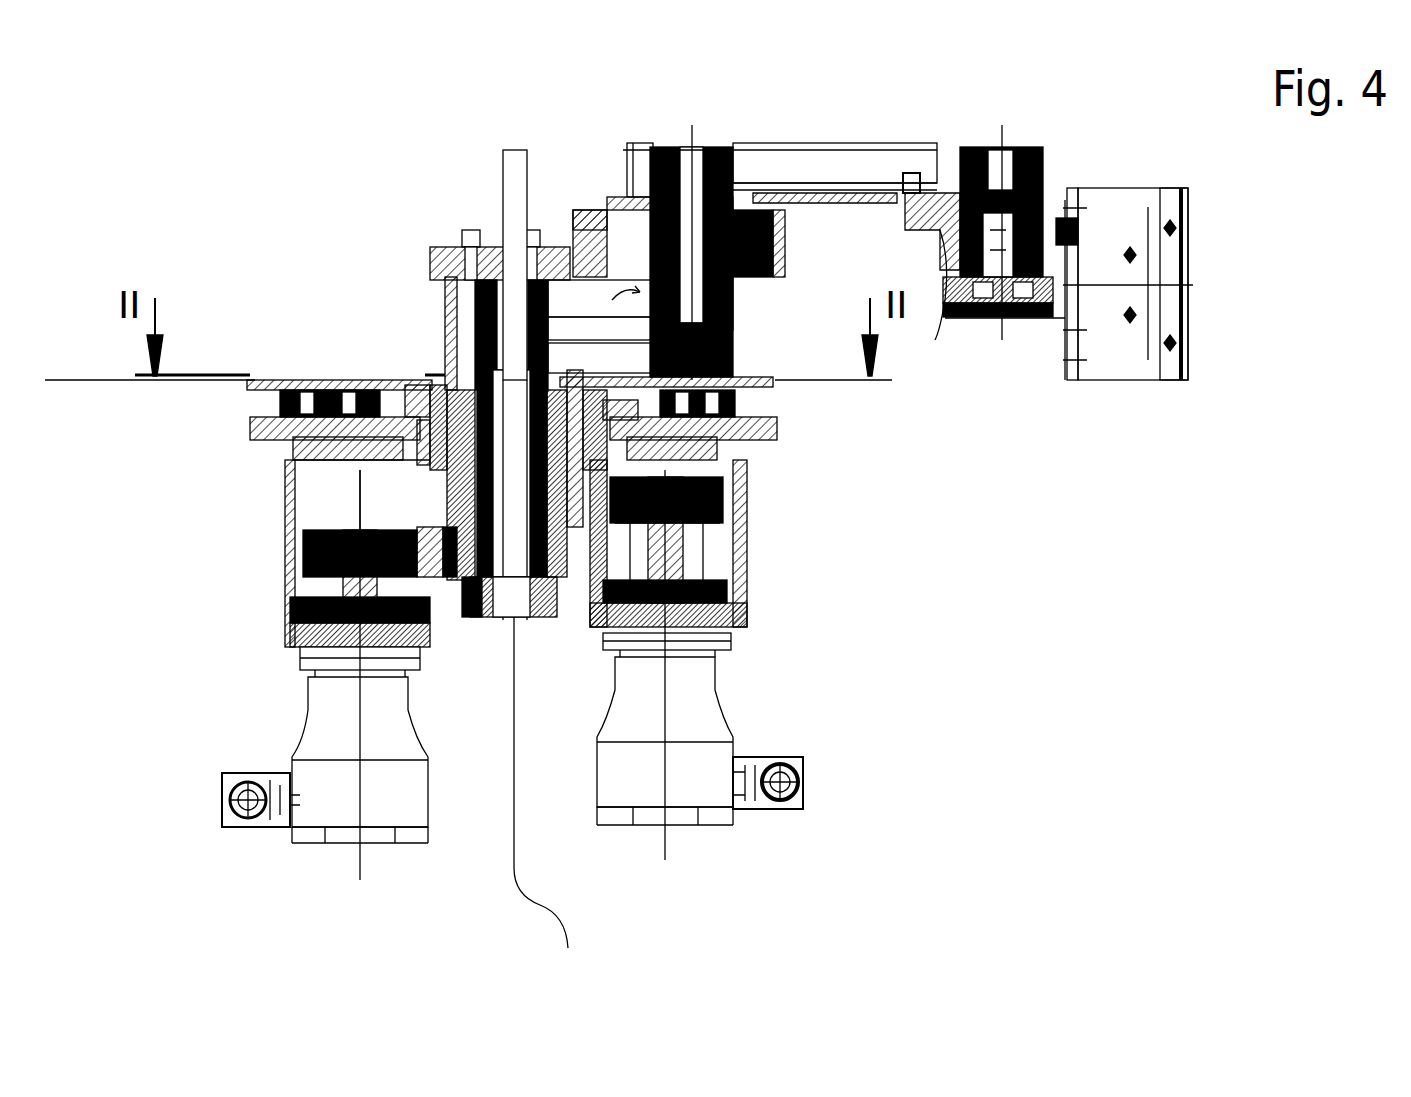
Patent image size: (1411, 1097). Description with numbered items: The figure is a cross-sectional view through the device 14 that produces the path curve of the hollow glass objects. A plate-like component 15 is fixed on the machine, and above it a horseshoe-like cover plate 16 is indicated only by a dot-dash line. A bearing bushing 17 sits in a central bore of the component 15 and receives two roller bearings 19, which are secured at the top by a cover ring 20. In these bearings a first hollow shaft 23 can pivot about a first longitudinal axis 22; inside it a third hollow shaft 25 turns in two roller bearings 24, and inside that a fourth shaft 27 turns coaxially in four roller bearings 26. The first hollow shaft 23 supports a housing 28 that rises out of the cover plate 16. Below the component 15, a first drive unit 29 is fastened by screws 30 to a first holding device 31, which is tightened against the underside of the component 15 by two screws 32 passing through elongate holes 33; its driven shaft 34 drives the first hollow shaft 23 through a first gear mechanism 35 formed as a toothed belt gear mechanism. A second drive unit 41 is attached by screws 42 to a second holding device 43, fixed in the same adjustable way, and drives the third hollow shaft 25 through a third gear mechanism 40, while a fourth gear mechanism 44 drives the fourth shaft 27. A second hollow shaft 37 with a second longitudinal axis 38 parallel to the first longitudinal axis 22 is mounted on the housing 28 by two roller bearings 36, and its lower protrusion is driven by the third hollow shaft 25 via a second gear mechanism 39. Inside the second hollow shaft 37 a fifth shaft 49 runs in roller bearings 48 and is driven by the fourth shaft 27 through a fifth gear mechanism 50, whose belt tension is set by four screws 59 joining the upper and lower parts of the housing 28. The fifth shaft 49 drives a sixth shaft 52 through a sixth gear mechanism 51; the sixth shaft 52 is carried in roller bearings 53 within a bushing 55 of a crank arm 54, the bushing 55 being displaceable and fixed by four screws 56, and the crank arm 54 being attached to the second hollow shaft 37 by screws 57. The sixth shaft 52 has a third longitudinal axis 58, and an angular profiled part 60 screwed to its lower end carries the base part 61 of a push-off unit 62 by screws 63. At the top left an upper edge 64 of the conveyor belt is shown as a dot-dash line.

The device 14 is at (983, 587).
The plate-like component 15 is at (250, 432).
The cover plate 16 is at (250, 385).
The bearing bushing 17 is at (735, 468).
The roller bearings 19 is at (405, 462).
The cover ring 20 is at (412, 385).
The first longitudinal axis 22 is at (559, 579).
The first hollow shaft 23 is at (572, 618).
The roller bearings 24 is at (434, 385).
The third hollow shaft 25 is at (452, 462).
The roller bearings 26 is at (561, 377).
The fourth shaft 27 is at (520, 660).
The housing 28 is at (430, 290).
The first drive unit 29 is at (705, 722).
The screws 30 is at (742, 628).
The first holding device 31 is at (742, 488).
The screws 32 is at (285, 470).
The elongate hole 33 is at (260, 405).
The driven shaft 34 is at (742, 560).
The first gear mechanism 35 is at (745, 505).
The roller bearings 36 is at (586, 215).
The second hollow shaft 37 is at (813, 323).
The second longitudinal axis 38 is at (706, 130).
The second gear mechanism 39 is at (735, 355).
The third gear mechanism 40 is at (290, 565).
The second drive unit 41 is at (320, 738).
The screws 42 is at (290, 640).
The second holding device 43 is at (290, 525).
The fourth gear mechanism 44 is at (478, 630).
The roller bearings 48 is at (735, 195).
The fifth shaft 49 is at (680, 148).
The fifth gear mechanism 50 is at (750, 292).
The sixth gear mechanism 51 is at (630, 187).
The sixth shaft 52 is at (1006, 148).
The roller bearings 53 is at (1043, 175).
The crank arm 54 is at (895, 205).
The bushing 55 is at (928, 300).
The screws 56 is at (926, 185).
The screws 57 is at (770, 195).
The third longitudinal axis 58 is at (1001, 340).
The screws 59 is at (530, 228).
The angular profiled part 60 is at (1066, 345).
The base part 61 is at (1130, 370).
The push-off unit 62 is at (1173, 392).
The screws 63 is at (1078, 236).
The upper edge 64 is at (88, 378).